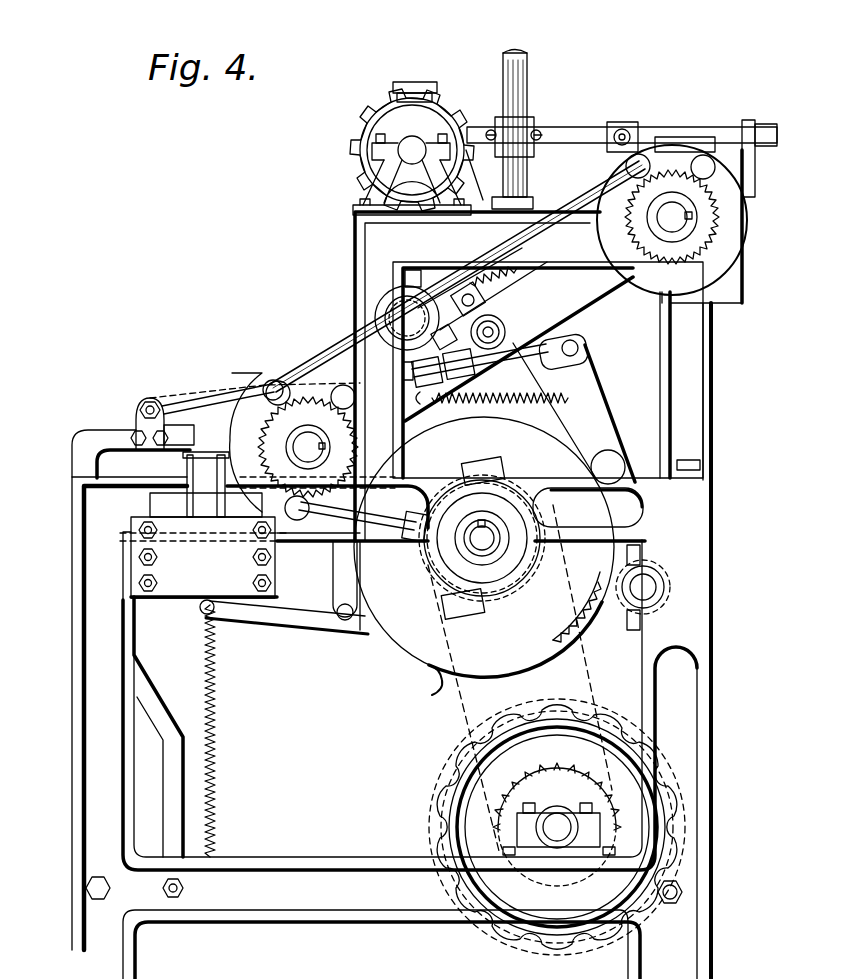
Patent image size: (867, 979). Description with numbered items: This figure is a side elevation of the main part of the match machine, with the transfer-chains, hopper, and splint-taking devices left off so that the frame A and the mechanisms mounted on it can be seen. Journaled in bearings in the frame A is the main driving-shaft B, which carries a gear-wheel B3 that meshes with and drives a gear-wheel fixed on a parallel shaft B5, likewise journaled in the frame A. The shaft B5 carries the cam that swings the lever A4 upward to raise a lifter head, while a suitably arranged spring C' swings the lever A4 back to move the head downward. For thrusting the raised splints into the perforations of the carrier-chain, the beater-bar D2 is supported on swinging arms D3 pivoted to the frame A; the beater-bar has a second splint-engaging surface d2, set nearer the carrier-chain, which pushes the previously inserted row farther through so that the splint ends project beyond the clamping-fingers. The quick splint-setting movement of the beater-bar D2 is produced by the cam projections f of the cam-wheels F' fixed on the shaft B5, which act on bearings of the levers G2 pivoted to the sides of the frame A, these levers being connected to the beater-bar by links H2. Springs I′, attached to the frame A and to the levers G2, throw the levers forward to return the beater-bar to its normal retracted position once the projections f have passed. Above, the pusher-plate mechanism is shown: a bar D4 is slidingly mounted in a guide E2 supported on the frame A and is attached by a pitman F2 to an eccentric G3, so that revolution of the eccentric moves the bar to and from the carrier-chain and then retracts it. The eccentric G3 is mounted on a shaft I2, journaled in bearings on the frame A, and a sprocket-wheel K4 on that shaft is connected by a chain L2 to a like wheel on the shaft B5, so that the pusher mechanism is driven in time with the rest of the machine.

The frame A is at (72, 747).
The lever A4 is at (297, 620).
The main driving-shaft B is at (653, 586).
The gear-wheel B3 is at (623, 647).
The shaft B5 is at (475, 545).
The spring C' is at (225, 728).
The beater-bar D2 is at (132, 420).
The swinging arm D3 is at (162, 698).
The parallel bar D4 is at (678, 132).
The guide E2 is at (497, 107).
The pitman F2 is at (562, 132).
The cam-wheel F' is at (484, 547).
The lever G2 is at (598, 415).
The eccentric G3 is at (390, 118).
The link H2 is at (202, 402).
The shaft I2 is at (402, 152).
The spring I′ is at (512, 408).
The sprocket-wheel K4 is at (357, 178).
The chain L2 is at (485, 181).
The splint-engaging surface d2 is at (193, 440).
The cam projection f is at (520, 667).